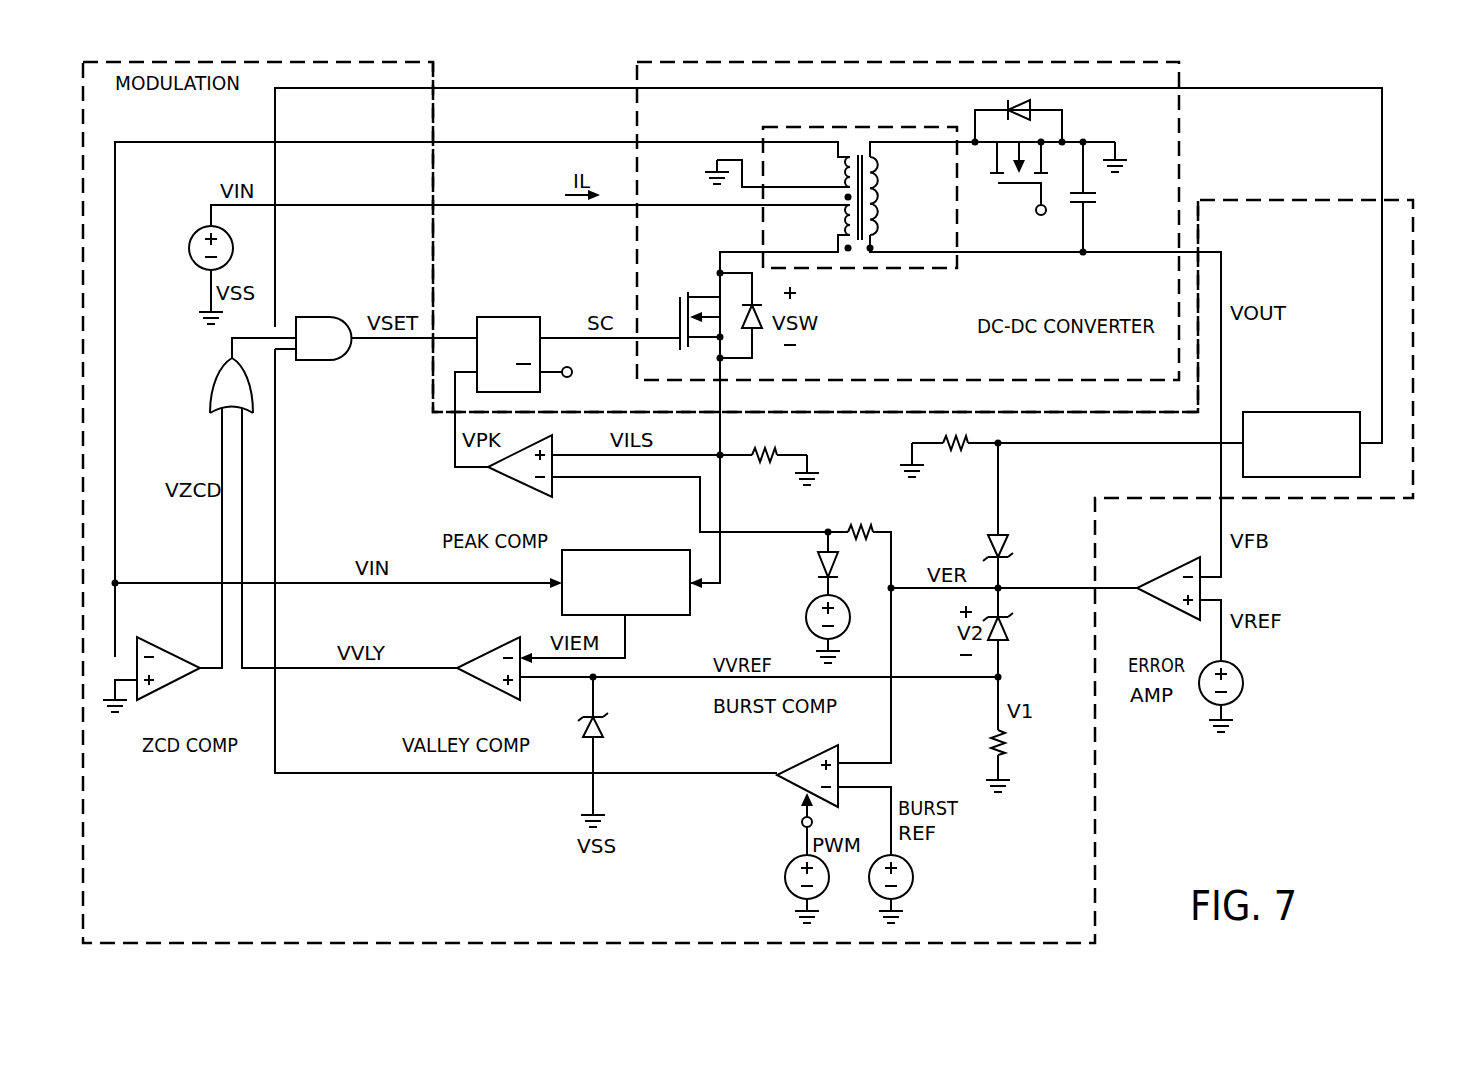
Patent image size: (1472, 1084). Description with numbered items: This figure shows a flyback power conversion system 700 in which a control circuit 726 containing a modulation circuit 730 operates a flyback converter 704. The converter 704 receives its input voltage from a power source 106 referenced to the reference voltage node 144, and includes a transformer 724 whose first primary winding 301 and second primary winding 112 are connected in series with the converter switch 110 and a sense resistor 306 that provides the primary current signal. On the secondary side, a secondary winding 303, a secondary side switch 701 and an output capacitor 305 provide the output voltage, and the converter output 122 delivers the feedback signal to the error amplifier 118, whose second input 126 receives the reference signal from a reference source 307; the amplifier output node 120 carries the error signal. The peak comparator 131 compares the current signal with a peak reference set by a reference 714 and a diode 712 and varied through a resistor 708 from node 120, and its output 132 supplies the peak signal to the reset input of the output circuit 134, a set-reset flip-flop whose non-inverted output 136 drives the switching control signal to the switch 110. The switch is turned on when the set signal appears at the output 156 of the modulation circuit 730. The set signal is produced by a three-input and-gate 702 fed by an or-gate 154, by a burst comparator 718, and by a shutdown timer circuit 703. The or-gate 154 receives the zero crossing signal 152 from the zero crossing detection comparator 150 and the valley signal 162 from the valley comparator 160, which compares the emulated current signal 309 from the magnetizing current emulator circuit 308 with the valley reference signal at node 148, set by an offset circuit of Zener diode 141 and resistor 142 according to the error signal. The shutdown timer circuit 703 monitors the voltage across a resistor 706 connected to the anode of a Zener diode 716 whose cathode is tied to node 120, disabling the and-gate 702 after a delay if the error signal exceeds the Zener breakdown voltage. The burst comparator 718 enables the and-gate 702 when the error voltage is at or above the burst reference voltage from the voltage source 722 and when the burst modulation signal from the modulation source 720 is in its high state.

The flyback DC-DC conversion system 700 is at (1364, 820).
The modulation circuit 730 is at (447, 120).
The DC-DC converter 704 is at (1192, 118).
The control circuit 726 is at (1408, 99).
The power source 106 is at (200, 230).
The reference voltage node 144 is at (210, 287).
The three input AND gate 702 is at (320, 317).
The OR gate 154 is at (213, 378).
The zero crossing detect signal VZCD 152 is at (220, 457).
The output of the modulation circuit 156 is at (385, 340).
The output circuit 134 is at (507, 317).
The non-inverted output 136 is at (617, 342).
The converter switch 110 is at (678, 297).
The transformer 724 is at (873, 282).
The first primary winding 301 is at (848, 182).
The second primary winding 112 is at (845, 212).
The secondary winding 303 is at (878, 197).
The secondary side switch 701 is at (1000, 185).
The output capacitor 305 is at (1097, 197).
The shutdown timer circuit 703 is at (1302, 412).
The peak comparator 131 is at (518, 487).
The first output of the modulation circuit 132 is at (455, 447).
The sense resistor 306 is at (762, 462).
The magnetizing current emulator circuit 308 is at (636, 550).
The emulated current signal VIEM 309 is at (627, 637).
The diode 712 is at (818, 565).
The reference 714 is at (806, 617).
The resistor 708 is at (862, 523).
The resistor 706 is at (958, 457).
The Zener diode 716 is at (985, 545).
The amplifier output node 120 is at (1045, 588).
The Zener diode 141 is at (1010, 632).
The node 148 is at (1003, 665).
The resistor 142 is at (1003, 745).
The error amplifier 118 is at (1165, 605).
The second input of the amplifier 126 is at (1221, 525).
The converter output 122 is at (1224, 641).
The reference source 307 is at (1243, 684).
The zero crossing detection comparator 150 is at (170, 688).
The valley comparator 160 is at (477, 690).
The valley signal VVLY 162 is at (358, 672).
The burst comparator 718 is at (792, 766).
The modulation source 720 is at (785, 878).
The voltage source 722 is at (913, 880).